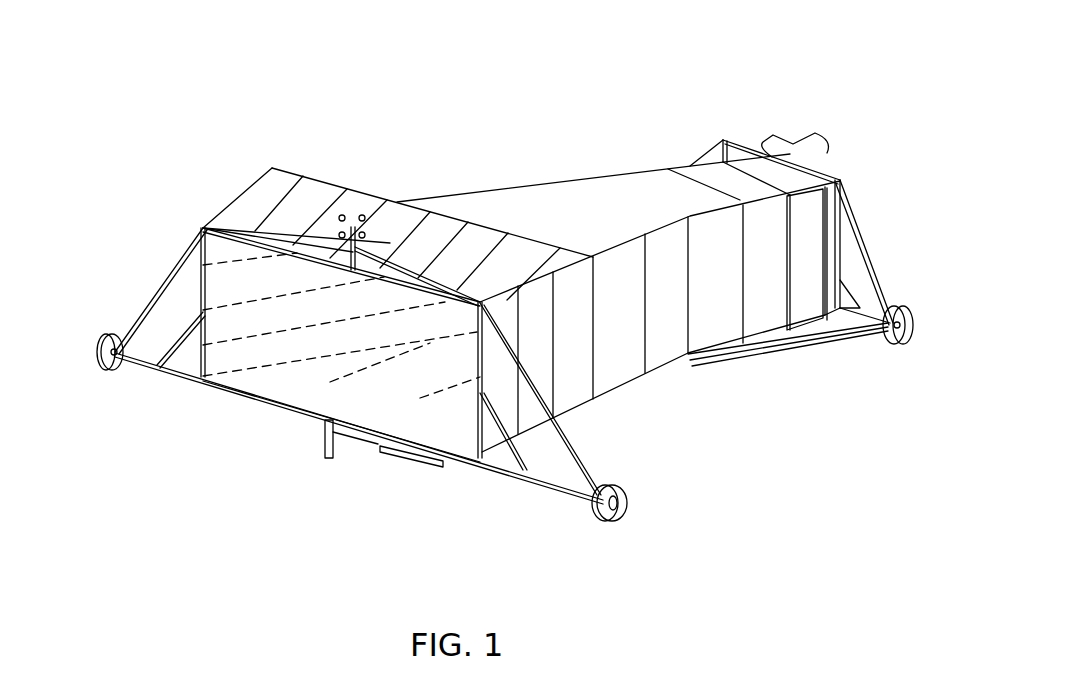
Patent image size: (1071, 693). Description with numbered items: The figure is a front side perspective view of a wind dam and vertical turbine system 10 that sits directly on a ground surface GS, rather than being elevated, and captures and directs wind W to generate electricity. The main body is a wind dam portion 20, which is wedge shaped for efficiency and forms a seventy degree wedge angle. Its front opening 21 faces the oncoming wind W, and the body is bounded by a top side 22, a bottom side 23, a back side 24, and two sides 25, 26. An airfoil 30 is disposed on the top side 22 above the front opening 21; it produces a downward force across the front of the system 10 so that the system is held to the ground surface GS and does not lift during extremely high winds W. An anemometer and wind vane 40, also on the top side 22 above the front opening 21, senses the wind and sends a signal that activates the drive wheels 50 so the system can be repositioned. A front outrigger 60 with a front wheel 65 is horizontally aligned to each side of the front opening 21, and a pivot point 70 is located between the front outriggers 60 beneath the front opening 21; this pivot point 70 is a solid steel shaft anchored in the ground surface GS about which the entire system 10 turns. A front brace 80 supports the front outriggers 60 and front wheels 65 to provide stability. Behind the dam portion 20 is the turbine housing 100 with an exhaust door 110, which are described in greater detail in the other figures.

The wind dam and vertical turbine system 10 is at (834, 74).
The wind dam portion 20 is at (470, 186).
The front opening 21 is at (295, 347).
The top side 22 is at (553, 232).
The bottom side 23 is at (625, 391).
The back side 24 is at (823, 150).
The side 25 is at (625, 292).
The side 26 is at (540, 178).
The airfoil 30 is at (410, 222).
The anemometer and wind vane 40 is at (337, 215).
The drive wheels 50 is at (897, 343).
The front outrigger 60 is at (138, 370).
The front wheel 65 is at (100, 350).
The pivot point 70 is at (329, 462).
The front brace 80 is at (420, 456).
The turbine housing 100 is at (773, 135).
The exhaust door 110 is at (785, 314).
The wind W is at (323, 395).
The ground surface GS is at (377, 567).